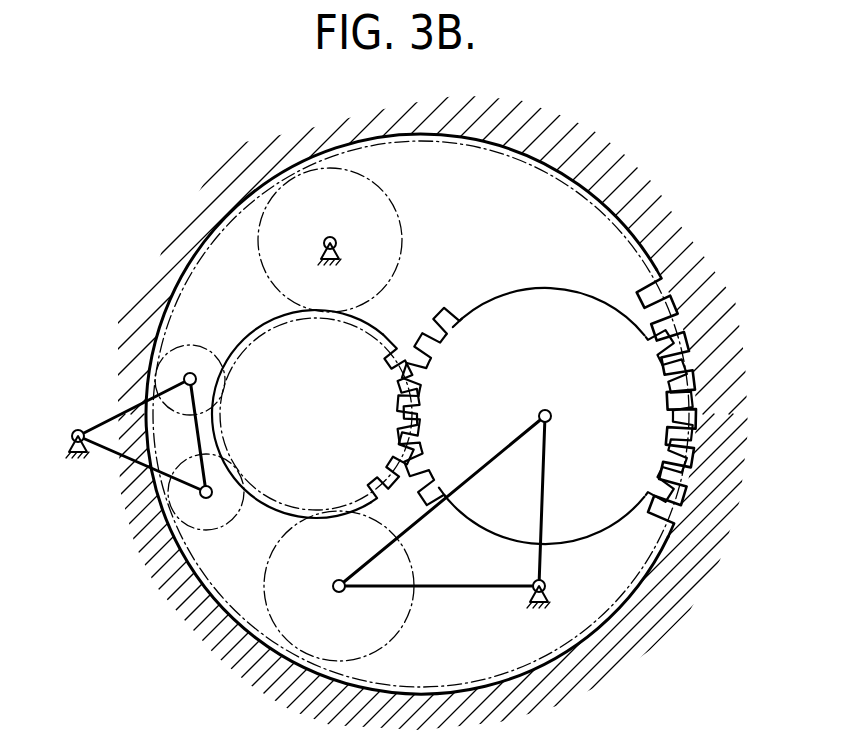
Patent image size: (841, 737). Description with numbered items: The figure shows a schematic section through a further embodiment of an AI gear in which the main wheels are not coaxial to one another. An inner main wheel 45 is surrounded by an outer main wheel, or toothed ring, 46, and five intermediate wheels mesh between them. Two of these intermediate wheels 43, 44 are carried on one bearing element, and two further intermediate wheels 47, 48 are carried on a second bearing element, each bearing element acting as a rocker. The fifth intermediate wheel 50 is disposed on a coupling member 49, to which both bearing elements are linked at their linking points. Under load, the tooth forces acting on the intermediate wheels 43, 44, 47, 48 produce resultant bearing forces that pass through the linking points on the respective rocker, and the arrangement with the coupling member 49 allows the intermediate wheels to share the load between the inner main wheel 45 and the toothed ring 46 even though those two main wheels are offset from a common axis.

The intermediate wheel 43 is at (516, 437).
The intermediate wheel 44 is at (339, 586).
The inner main wheel 45 is at (316, 414).
The outer main wheel (toothed ring) 46 is at (657, 270).
The intermediate wheel 47 is at (178, 375).
The intermediate wheel 48 is at (178, 500).
The coupling member 49 is at (343, 253).
The intermediate wheel 50 is at (330, 240).